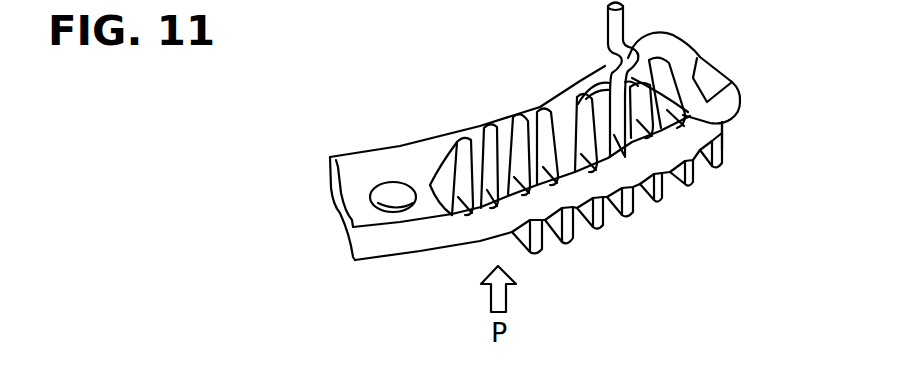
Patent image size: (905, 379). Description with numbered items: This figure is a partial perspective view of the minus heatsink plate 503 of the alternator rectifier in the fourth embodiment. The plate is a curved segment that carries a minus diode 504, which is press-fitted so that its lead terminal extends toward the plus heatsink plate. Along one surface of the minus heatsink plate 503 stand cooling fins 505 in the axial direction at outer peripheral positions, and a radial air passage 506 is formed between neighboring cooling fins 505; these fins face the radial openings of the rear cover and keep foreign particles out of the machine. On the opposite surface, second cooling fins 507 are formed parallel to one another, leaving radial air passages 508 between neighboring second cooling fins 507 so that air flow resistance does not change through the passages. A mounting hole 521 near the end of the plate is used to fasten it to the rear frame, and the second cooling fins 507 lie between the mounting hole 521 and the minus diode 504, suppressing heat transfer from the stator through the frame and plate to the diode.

The minus heatsink plate 503 is at (393, 163).
The minus diode 504 is at (599, 96).
The cooling fin 505 is at (693, 78).
The radial air passage 506 is at (732, 120).
The second cooling fin 507 is at (608, 226).
The radial air passage 508 is at (677, 186).
The mounting hole 521 is at (396, 206).